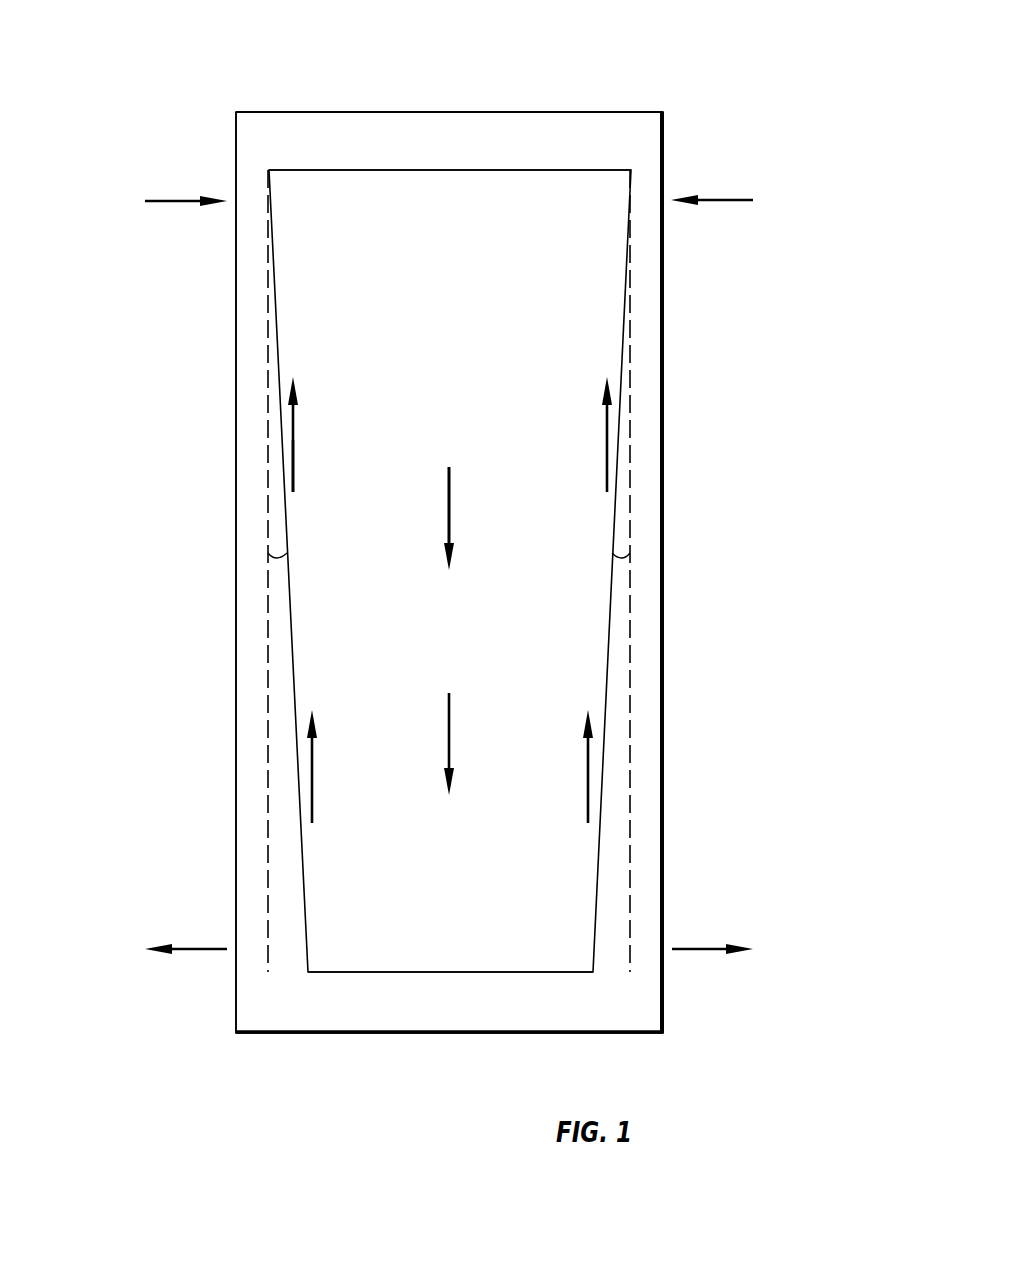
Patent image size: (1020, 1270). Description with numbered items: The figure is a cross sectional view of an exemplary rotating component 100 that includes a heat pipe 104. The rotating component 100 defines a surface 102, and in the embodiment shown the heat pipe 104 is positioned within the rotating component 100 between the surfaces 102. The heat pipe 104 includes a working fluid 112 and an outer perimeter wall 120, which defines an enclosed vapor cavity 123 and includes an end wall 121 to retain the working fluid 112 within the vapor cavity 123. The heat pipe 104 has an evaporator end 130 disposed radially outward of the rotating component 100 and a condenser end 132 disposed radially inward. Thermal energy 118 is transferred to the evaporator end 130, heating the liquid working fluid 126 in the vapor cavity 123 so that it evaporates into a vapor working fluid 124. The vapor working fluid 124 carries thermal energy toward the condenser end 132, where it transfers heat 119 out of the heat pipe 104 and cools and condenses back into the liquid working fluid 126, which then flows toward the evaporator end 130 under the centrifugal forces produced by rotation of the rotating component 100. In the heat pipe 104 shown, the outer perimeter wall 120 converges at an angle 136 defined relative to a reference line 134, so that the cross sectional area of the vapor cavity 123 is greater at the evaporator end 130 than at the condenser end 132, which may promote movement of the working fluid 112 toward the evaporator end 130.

The rotating component 100 is at (634, 66).
The surface 102 is at (236, 360).
The heat pipe 104 is at (460, 143).
The working fluid 112 is at (312, 478).
The thermal energy 118 is at (192, 203).
The heat 119 is at (192, 951).
The outer perimeter wall 120 is at (273, 262).
The end wall 121 is at (349, 170).
The vapor cavity 123 is at (467, 387).
The vapor working fluid 124 is at (452, 503).
The liquid working fluid 126 is at (296, 452).
The evaporator end 130 is at (385, 50).
The condenser end 132 is at (444, 1054).
The reference line 134 is at (268, 822).
The angle 136 is at (273, 557).